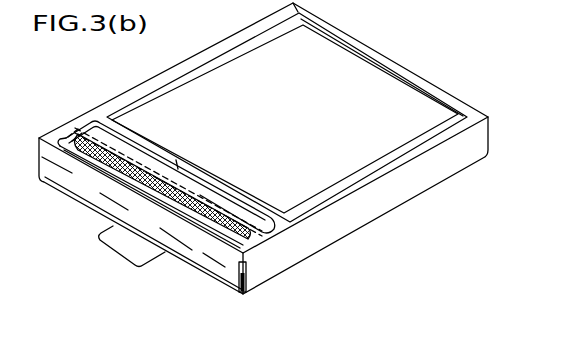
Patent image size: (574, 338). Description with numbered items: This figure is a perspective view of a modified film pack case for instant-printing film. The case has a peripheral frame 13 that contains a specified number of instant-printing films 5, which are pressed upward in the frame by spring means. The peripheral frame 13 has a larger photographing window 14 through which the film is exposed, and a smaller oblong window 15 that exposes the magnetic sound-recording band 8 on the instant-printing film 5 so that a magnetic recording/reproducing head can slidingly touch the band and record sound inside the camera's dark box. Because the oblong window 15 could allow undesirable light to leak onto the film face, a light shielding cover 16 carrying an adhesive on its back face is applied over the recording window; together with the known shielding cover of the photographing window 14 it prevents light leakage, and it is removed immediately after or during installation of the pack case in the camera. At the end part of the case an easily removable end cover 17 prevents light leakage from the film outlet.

The instant-printing film 5 is at (377, 119).
The magnetic sound-recording band 8 is at (92, 146).
The peripheral frame 13 is at (380, 173).
The photographing window 14 is at (306, 64).
The oblong window 15 is at (276, 233).
The light shielding cover 16 is at (218, 243).
The end cover 17 is at (241, 272).